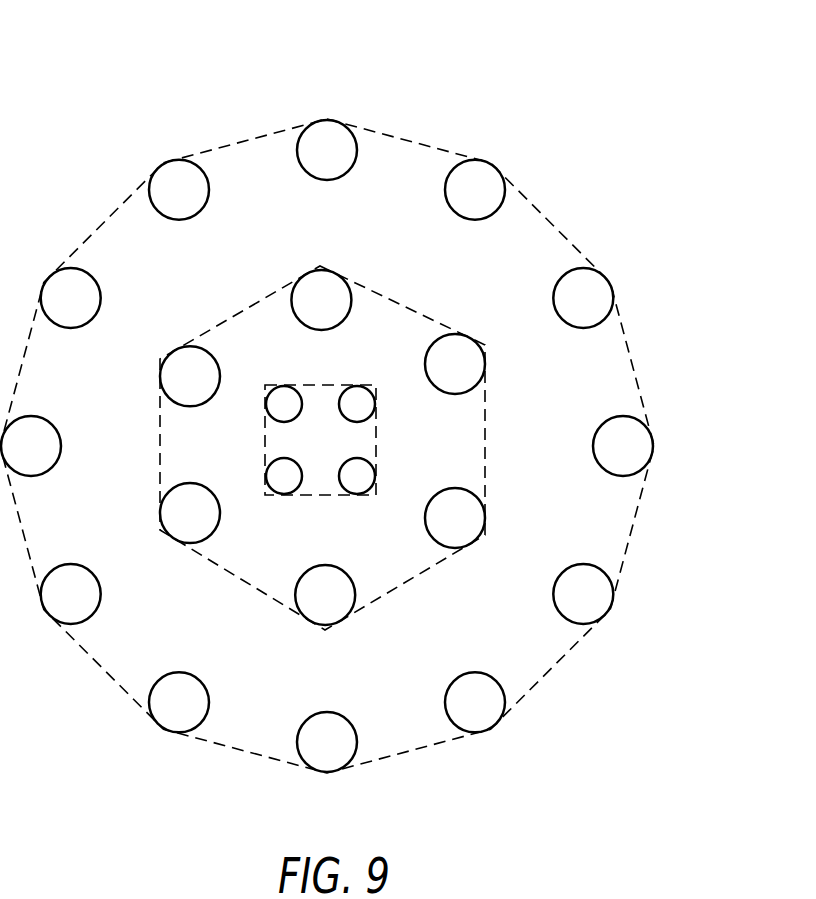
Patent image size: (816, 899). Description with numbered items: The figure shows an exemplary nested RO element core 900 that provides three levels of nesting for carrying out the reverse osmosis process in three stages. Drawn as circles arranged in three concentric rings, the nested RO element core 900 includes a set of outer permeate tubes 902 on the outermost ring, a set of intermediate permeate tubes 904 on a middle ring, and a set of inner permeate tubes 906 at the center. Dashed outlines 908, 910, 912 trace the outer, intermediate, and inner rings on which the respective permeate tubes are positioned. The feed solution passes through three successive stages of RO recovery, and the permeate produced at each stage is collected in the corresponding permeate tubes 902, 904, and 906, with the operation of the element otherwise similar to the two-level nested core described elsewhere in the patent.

The nested RO element core 900 is at (170, 60).
The outer permeate tubes 902 is at (508, 197).
The intermediate permeate tubes 904 is at (326, 270).
The inner permeate tubes 906 is at (278, 385).
The outer ring outline 908 is at (630, 367).
The middle ring outline 910 is at (487, 443).
The inner ring outline 912 is at (375, 445).